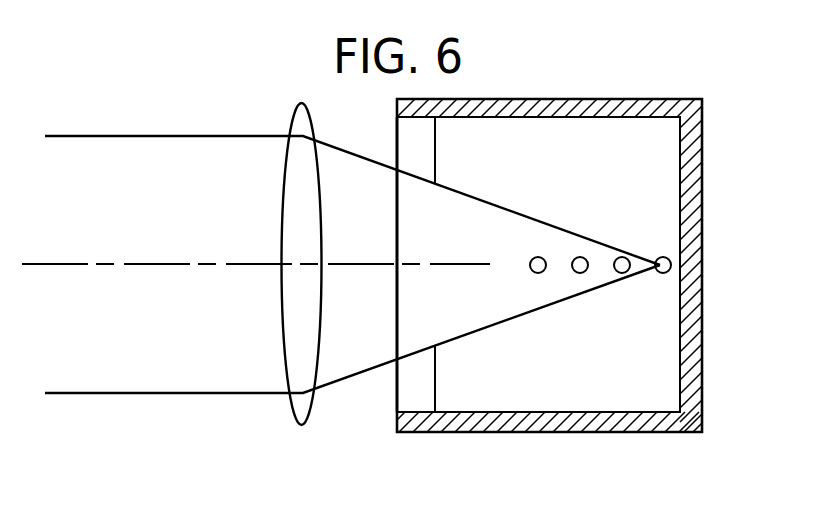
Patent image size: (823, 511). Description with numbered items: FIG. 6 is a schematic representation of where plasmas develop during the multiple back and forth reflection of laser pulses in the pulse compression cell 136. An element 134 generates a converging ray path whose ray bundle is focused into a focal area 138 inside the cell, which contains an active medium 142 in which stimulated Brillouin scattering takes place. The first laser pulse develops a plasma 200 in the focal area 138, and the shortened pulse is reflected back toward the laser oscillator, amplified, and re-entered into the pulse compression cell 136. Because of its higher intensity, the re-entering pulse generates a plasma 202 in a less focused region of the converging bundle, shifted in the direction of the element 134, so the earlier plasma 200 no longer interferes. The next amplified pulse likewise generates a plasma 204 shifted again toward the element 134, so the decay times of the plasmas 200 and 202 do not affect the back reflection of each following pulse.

The element to generate a converging ray path 134 is at (300, 405).
The pulse compression cell 136 is at (603, 420).
The focal area 138 is at (682, 262).
The active medium 142 is at (483, 400).
The plasma 200 is at (664, 273).
The plasma 202 is at (622, 256).
The plasma 204 is at (581, 274).